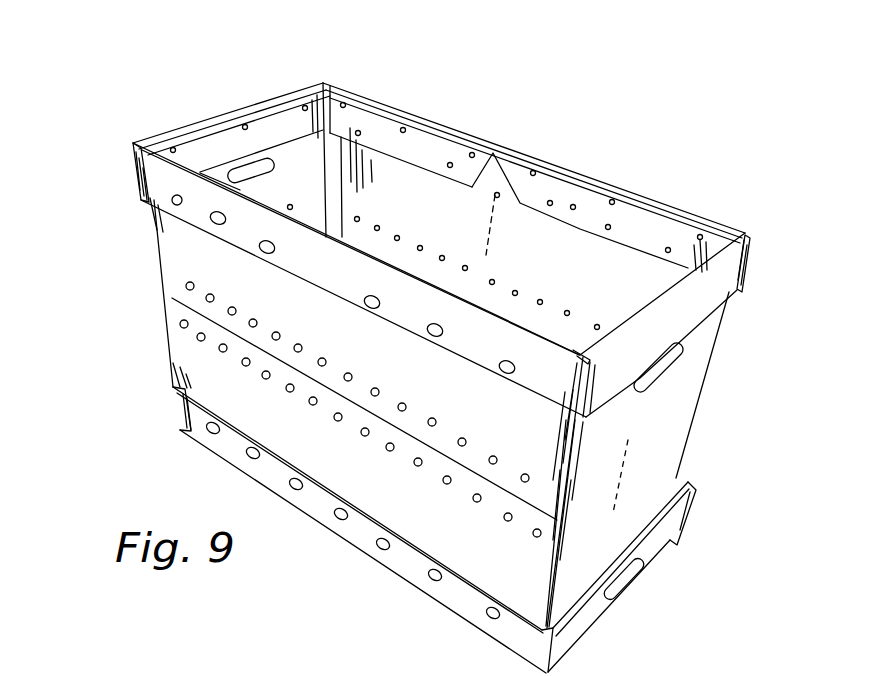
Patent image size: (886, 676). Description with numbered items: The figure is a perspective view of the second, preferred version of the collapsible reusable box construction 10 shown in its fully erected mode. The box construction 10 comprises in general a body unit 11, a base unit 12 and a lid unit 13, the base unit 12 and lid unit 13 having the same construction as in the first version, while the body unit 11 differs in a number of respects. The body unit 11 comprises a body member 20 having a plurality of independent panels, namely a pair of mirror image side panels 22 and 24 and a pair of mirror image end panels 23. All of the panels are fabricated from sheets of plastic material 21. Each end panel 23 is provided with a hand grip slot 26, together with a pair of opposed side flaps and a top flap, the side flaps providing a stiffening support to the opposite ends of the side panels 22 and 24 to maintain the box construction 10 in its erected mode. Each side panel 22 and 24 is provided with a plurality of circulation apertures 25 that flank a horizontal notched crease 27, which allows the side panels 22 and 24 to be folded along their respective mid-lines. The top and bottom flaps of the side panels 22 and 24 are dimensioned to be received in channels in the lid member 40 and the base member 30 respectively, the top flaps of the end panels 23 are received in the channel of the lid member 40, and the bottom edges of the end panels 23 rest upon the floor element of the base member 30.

The box construction 10 is at (168, 62).
The body unit 11 is at (148, 268).
The base unit 12 is at (168, 411).
The lid unit 13 is at (130, 142).
The body member 20 is at (712, 403).
The sheets of plastic material 21 is at (316, 210).
The side panel 22 is at (498, 185).
The end panel 23 is at (293, 160).
The side panel 24 is at (300, 322).
The circulation apertures 25 is at (401, 404).
The hand grip slot 26 is at (250, 173).
The horizontal notched crease 27 is at (462, 382).
The base member 30 is at (680, 515).
The lid member 40 is at (745, 262).